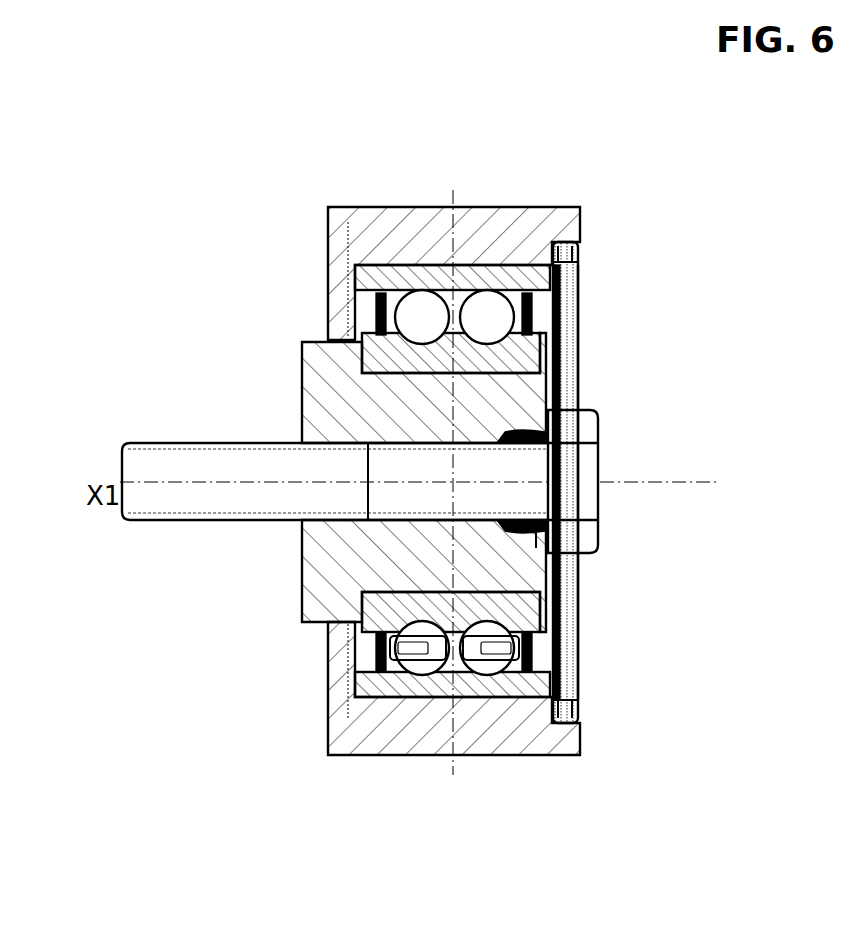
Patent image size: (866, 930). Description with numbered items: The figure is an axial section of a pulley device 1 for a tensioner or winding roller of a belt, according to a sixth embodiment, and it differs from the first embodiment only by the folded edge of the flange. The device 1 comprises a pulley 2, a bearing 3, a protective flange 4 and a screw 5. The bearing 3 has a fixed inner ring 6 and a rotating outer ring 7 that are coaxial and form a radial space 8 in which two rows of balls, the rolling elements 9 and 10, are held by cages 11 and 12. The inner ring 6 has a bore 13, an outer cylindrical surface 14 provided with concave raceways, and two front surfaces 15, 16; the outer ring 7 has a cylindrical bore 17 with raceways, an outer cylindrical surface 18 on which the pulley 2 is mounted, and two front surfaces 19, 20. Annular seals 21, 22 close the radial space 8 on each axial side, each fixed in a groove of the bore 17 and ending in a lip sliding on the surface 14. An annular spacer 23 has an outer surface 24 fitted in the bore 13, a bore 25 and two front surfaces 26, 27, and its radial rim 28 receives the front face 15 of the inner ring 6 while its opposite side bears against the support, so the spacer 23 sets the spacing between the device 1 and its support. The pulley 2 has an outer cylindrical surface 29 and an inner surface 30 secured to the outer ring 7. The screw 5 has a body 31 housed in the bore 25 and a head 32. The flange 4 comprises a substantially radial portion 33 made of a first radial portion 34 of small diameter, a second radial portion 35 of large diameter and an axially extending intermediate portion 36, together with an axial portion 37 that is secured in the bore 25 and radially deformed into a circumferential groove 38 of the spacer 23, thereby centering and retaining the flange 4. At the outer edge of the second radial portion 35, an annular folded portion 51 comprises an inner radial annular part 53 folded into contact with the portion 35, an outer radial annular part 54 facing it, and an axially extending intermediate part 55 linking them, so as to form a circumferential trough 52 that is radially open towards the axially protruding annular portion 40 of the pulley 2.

The pulley device 1 is at (176, 335).
The pulley 2 is at (354, 204).
The bearing 3 is at (346, 292).
The protective flange 4 is at (661, 484).
The screw 5 is at (148, 530).
The fixed inner ring 6 is at (360, 350).
The rotating outer ring 7 is at (407, 683).
The radial space 8 is at (445, 265).
The rolling elements 9 is at (422, 317).
The rolling elements 10 is at (487, 317).
The cage 11 is at (395, 680).
The cage 12 is at (480, 680).
The bore 13 is at (385, 390).
The outer cylindrical surface 14 is at (372, 660).
The front surface 15 is at (330, 627).
The front surface 16 is at (578, 625).
The cylindrical bore 17 is at (370, 312).
The outer cylindrical surface 18 is at (405, 248).
The front surface 19 is at (357, 272).
The front surface 20 is at (578, 250).
The annular seal 21 is at (365, 672).
The annular seal 22 is at (547, 697).
The spacer 23 is at (298, 572).
The outer surface 24 is at (357, 612).
The bore 25 is at (340, 450).
The front surface 26 is at (300, 544).
The front surface 27 is at (578, 585).
The radial rim 28 is at (300, 418).
The outer cylindrical surface 29 is at (437, 757).
The inner surface 30 is at (462, 265).
The body 31 is at (118, 470).
The head 32 is at (598, 548).
The substantially radial portion 33 is at (661, 477).
The first radial portion 34 is at (632, 482).
The second radial portion 35 is at (565, 300).
The intermediate portion 36 is at (565, 358).
The axial portion 37 is at (540, 471).
The circumferential groove 38 is at (500, 507).
The axially protruding annular portion 40 is at (580, 755).
The annular folded portion 51 is at (630, 115).
The circumferential trough 52 is at (580, 733).
The inner radial annular part 53 is at (553, 242).
The outer radial annular part 54 is at (578, 242).
The intermediate part 55 is at (565, 242).